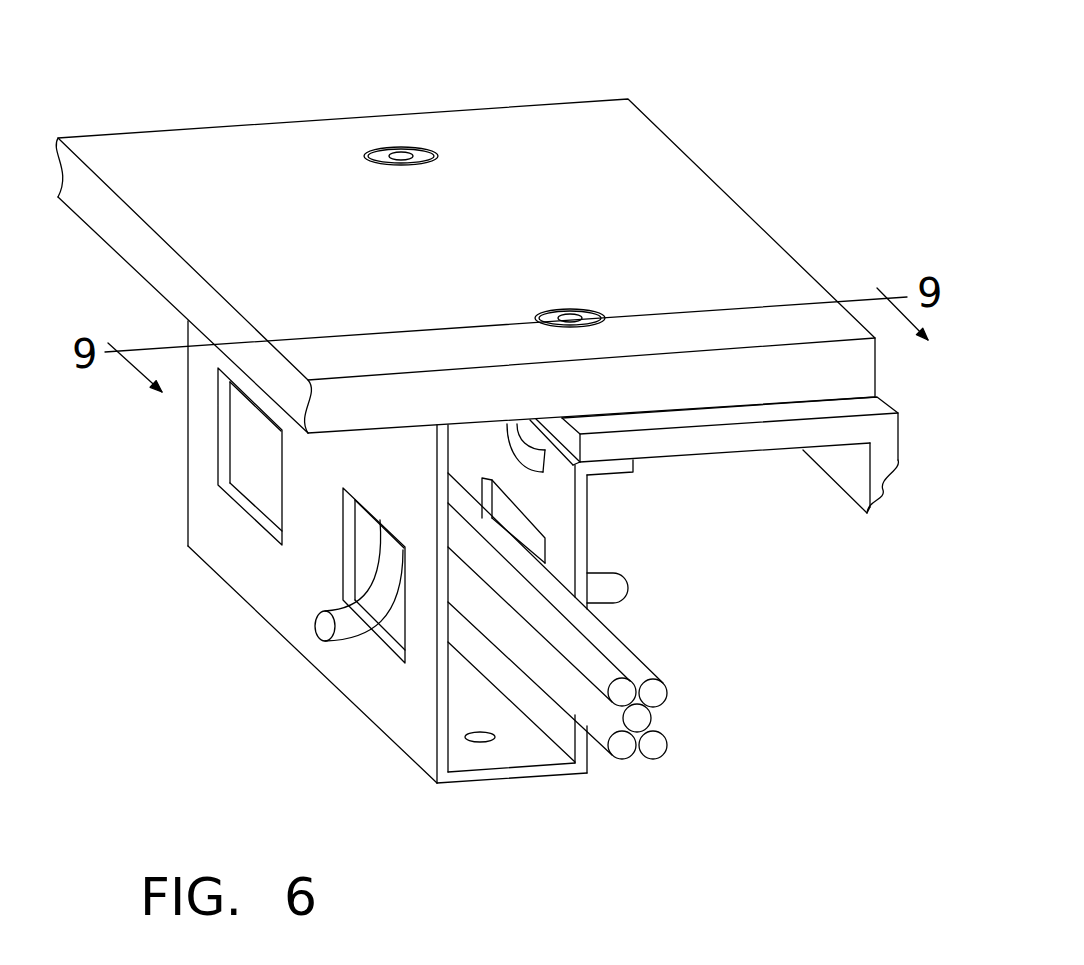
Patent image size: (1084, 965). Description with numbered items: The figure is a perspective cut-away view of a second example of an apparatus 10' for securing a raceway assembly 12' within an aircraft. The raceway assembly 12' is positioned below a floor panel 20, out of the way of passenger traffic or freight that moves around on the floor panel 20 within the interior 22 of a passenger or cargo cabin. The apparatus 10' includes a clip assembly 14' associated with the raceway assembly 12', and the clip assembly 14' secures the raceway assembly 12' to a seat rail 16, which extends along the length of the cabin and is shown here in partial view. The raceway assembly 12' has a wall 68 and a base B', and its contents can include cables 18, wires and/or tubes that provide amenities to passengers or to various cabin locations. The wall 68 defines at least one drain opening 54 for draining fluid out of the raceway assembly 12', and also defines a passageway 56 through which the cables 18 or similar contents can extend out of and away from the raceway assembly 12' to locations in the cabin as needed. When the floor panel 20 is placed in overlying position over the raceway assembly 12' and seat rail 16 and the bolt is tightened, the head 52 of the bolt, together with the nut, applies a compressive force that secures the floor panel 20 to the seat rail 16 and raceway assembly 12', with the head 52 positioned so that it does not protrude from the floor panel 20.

The interior 22 is at (428, 33).
The floor panel 20 is at (637, 193).
The head 52 is at (420, 157).
The raceway assembly 12' is at (349, 552).
The passageway 56 is at (220, 497).
The wall 68 is at (287, 608).
The cables 18 is at (347, 623).
The drain opening 54 is at (480, 745).
The clip assembly 14' is at (603, 596).
The seat rail 16 is at (818, 435).
The apparatus 10' is at (799, 512).
The base B' is at (591, 823).